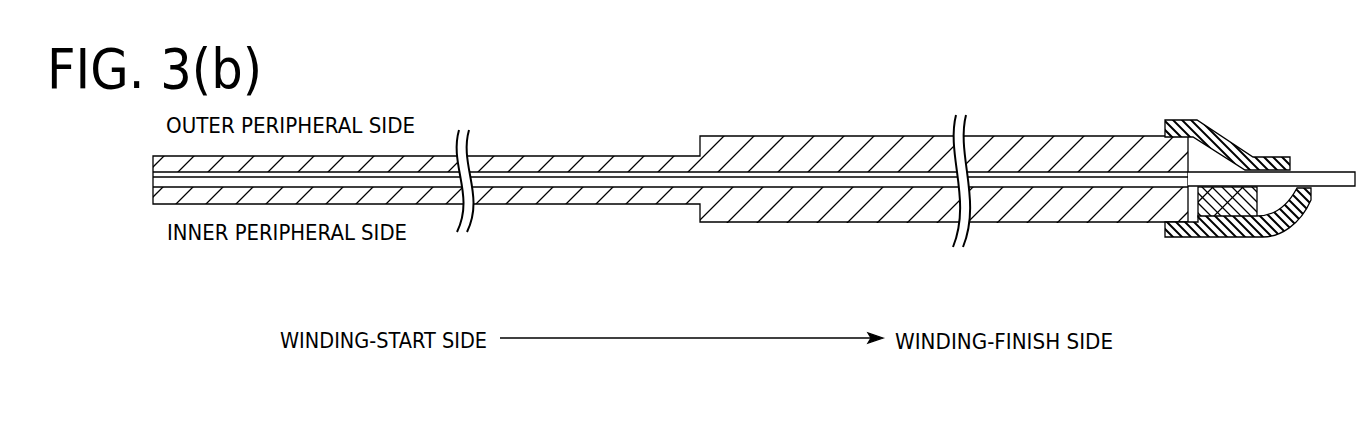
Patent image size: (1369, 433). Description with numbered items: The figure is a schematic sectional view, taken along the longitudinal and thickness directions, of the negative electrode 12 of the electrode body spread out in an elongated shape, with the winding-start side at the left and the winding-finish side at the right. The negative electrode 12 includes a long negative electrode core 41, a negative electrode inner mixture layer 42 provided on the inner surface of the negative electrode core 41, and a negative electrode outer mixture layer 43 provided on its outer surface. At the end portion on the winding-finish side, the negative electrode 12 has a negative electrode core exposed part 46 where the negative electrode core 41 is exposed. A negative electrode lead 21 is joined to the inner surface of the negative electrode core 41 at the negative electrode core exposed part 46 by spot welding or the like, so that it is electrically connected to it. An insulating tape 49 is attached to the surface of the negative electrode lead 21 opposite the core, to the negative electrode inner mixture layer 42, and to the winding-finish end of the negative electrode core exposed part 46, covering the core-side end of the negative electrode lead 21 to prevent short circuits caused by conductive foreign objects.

The negative electrode 12 is at (665, 149).
The negative electrode core 41 is at (533, 178).
The negative electrode inner mixture layer 42 is at (557, 193).
The negative electrode outer mixture layer 43 is at (598, 163).
The negative electrode core exposed part 46 is at (1247, 180).
The insulating tape 49 is at (1205, 133).
The negative electrode lead 21 is at (1233, 217).